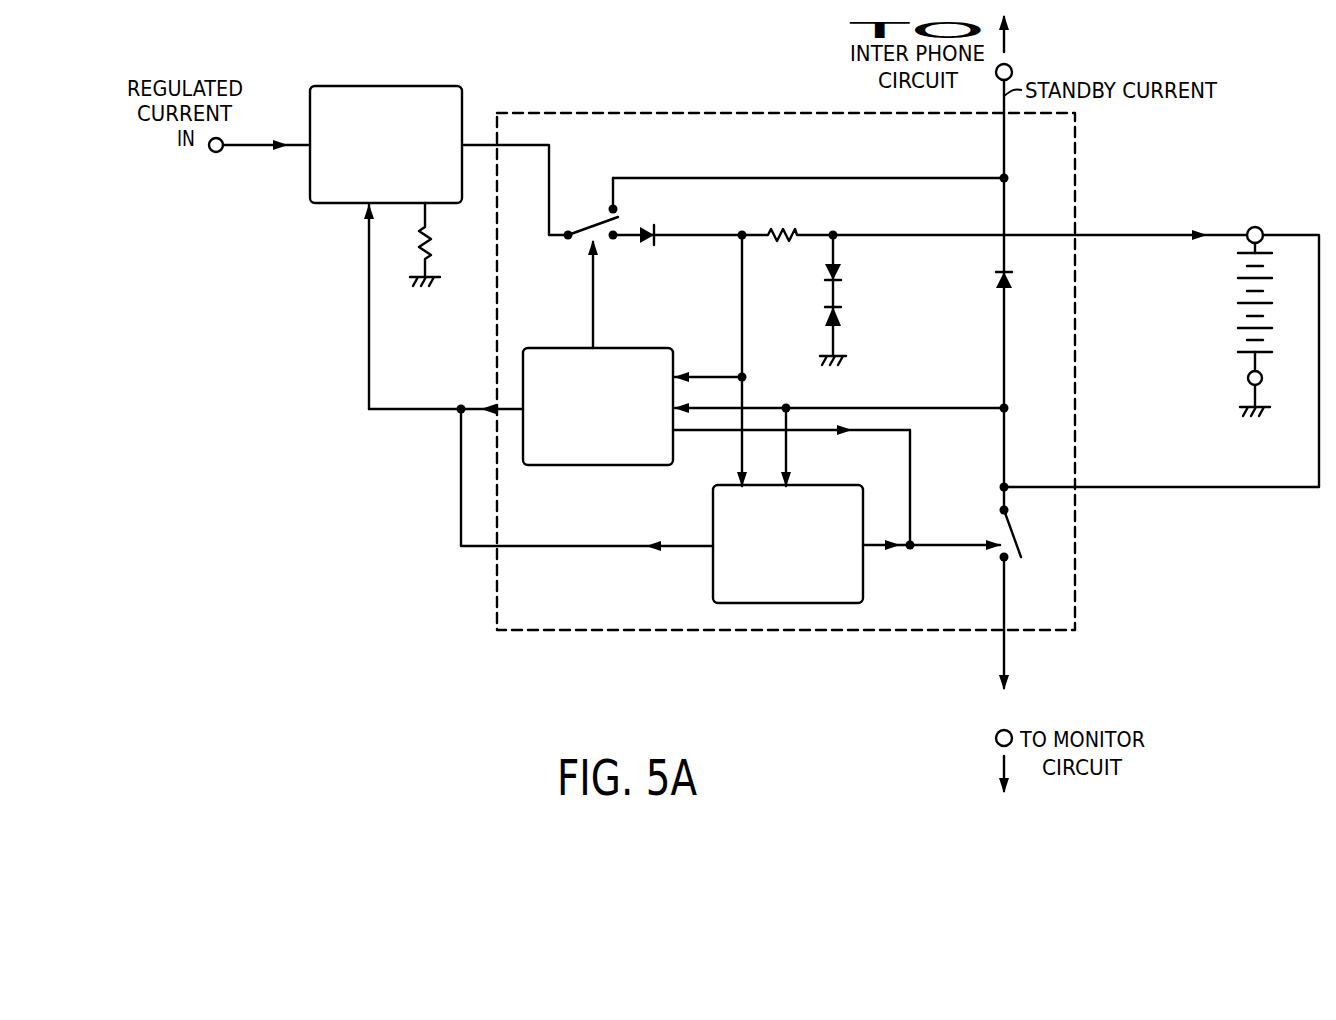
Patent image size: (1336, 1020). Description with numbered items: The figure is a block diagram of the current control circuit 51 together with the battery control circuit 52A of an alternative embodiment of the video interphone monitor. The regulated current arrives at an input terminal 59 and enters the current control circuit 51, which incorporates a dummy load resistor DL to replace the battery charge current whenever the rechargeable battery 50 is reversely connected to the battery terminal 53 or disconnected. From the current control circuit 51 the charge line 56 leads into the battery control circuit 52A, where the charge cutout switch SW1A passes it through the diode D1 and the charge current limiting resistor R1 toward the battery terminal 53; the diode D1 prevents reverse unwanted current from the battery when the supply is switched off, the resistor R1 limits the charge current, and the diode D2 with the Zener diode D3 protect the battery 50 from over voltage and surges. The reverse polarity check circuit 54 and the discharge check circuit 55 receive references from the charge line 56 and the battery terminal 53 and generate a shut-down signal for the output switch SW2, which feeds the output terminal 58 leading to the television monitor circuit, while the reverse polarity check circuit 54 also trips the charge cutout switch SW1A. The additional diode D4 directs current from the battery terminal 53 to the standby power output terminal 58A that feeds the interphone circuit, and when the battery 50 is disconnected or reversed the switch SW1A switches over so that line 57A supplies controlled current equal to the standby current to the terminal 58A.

The rechargeable battery 50 is at (1237, 308).
The current control circuit 51 is at (436, 86).
The battery control circuit 52A is at (1076, 170).
The battery terminal 53 is at (1262, 228).
The reverse polarity check circuit 54 is at (575, 466).
The discharge check circuit 55 is at (863, 568).
The charge line 56 is at (549, 178).
The line 57A is at (732, 178).
The output terminal 58 is at (996, 740).
The power output terminal 58A is at (1011, 68).
The regulated current input terminal 59 is at (221, 152).
The diode D1 is at (652, 246).
The diode D2 is at (840, 272).
The Zener diode D3 is at (840, 318).
The diode D4 is at (1012, 282).
The charge current limiting resistor R1 is at (772, 240).
The dummy load resistor DL is at (431, 258).
The charge cutout switch SW1A is at (560, 240).
The output switch SW2 is at (1010, 494).